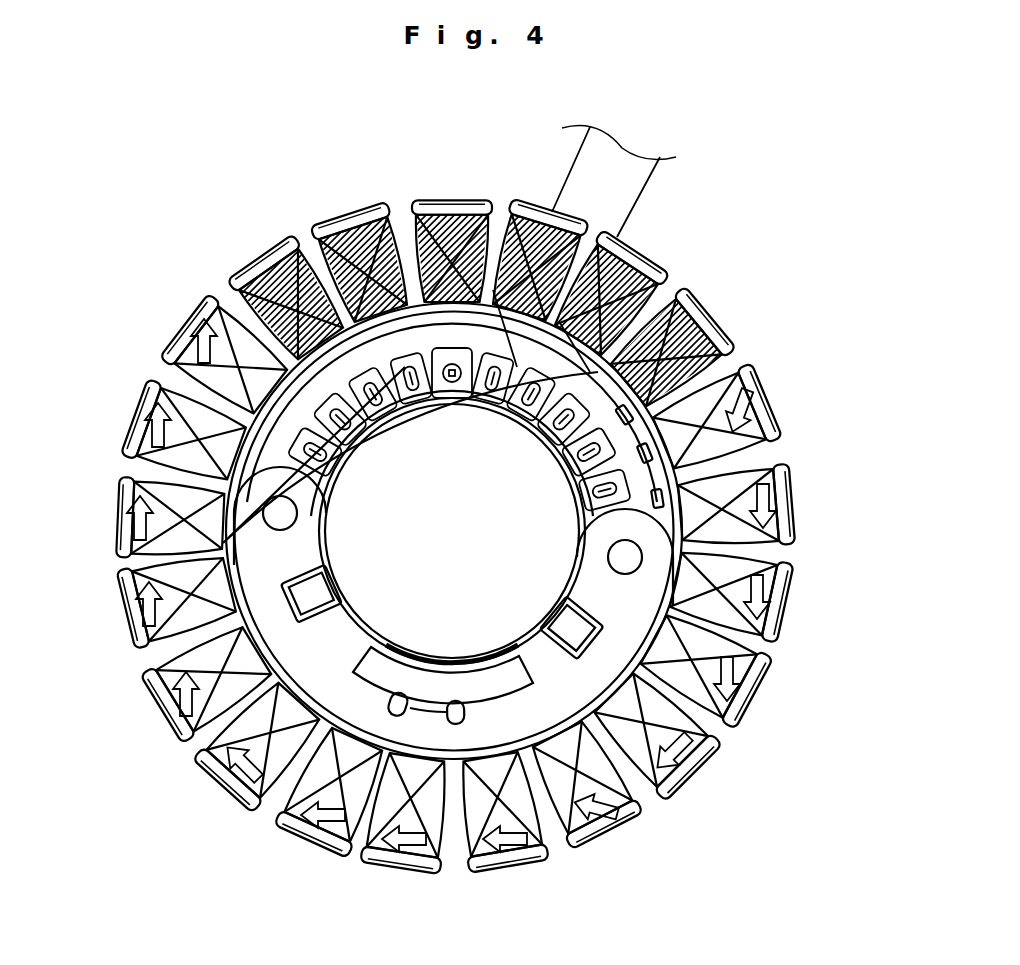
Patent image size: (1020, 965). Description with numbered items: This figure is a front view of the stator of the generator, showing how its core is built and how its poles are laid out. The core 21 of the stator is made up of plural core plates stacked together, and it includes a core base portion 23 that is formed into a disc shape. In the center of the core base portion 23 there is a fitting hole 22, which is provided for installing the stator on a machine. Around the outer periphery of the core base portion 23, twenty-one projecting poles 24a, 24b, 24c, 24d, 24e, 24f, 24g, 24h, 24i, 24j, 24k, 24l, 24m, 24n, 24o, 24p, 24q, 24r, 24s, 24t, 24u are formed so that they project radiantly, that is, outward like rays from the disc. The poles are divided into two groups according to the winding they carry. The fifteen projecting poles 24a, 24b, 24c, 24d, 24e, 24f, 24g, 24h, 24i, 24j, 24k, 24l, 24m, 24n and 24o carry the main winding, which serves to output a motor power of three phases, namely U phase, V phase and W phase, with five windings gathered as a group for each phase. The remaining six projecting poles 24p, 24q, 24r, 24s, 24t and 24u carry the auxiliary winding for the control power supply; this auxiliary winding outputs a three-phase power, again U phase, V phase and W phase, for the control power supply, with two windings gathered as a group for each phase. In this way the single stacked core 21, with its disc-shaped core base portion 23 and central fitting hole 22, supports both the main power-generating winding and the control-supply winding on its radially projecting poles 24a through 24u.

The core 21 is at (528, 660).
The fitting hole 22 is at (362, 610).
The core base portion 23 is at (348, 722).
The projecting pole 24a is at (178, 342).
The projecting pole 24b is at (128, 443).
The projecting pole 24c is at (116, 520).
The projecting pole 24d is at (128, 635).
The projecting pole 24e is at (170, 725).
The projecting pole 24f is at (235, 800).
The projecting pole 24g is at (330, 855).
The projecting pole 24h is at (412, 872).
The projecting pole 24i is at (510, 872).
The projecting pole 24j is at (605, 846).
The projecting pole 24k is at (695, 790).
The projecting pole 24l is at (752, 712).
The projecting pole 24m is at (788, 605).
The projecting pole 24n is at (792, 500).
The projecting pole 24o is at (775, 400).
The projecting pole 24p is at (725, 315).
The projecting pole 24q is at (655, 258).
The projecting pole 24r is at (545, 205).
The projecting pole 24s is at (455, 197).
The projecting pole 24t is at (345, 212).
The projecting pole 24u is at (262, 250).